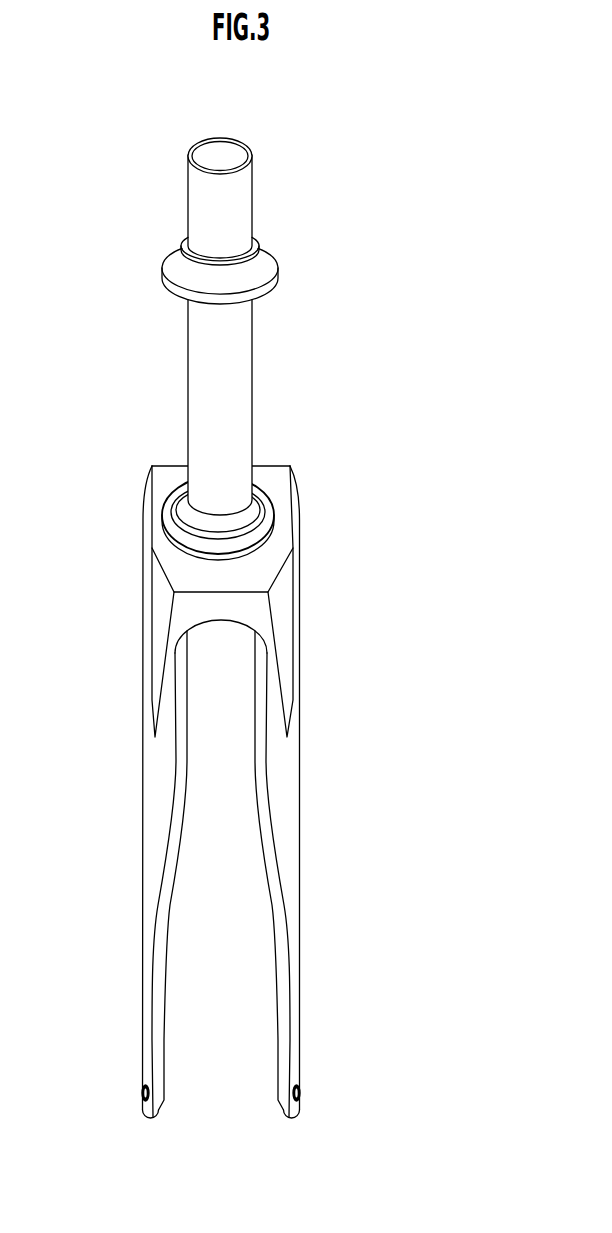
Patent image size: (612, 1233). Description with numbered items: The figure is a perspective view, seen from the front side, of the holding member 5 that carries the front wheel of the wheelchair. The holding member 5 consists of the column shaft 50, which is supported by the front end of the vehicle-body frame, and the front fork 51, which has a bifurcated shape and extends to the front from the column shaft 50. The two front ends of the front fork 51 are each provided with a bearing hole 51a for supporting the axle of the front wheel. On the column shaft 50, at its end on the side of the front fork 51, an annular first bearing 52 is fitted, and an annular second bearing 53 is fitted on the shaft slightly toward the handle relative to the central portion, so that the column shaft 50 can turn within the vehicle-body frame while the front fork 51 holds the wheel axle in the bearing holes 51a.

The holding member 5 is at (245, 628).
The column shaft 50 is at (243, 370).
The front fork 51 is at (183, 869).
The bearing hole 51a is at (143, 1092).
The first bearing 52 is at (258, 497).
The second bearing 53 is at (267, 258).